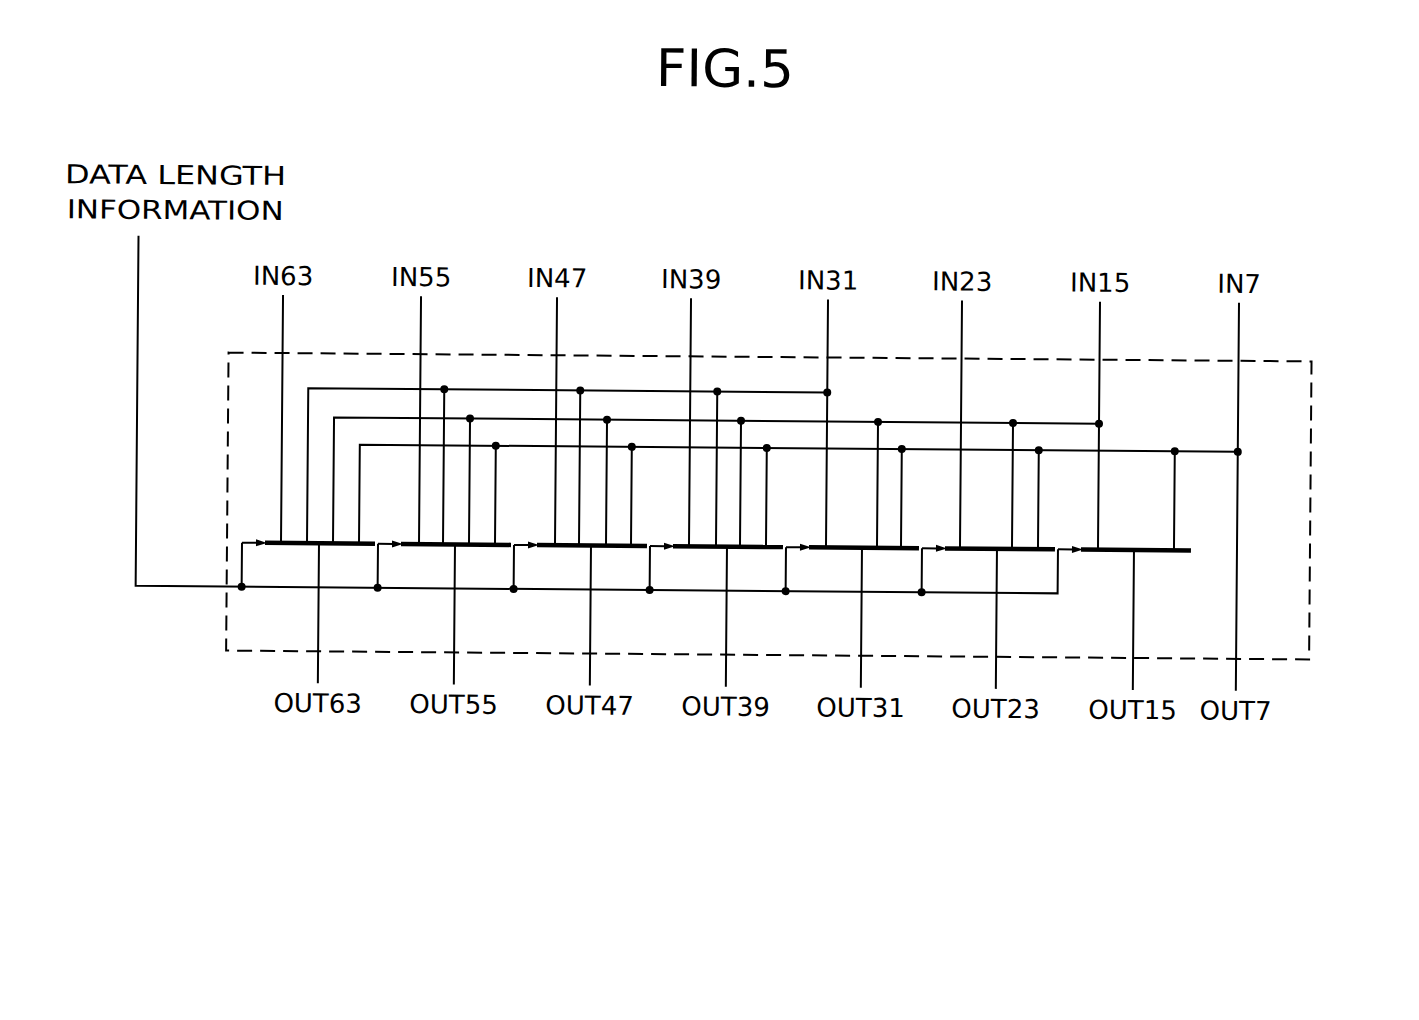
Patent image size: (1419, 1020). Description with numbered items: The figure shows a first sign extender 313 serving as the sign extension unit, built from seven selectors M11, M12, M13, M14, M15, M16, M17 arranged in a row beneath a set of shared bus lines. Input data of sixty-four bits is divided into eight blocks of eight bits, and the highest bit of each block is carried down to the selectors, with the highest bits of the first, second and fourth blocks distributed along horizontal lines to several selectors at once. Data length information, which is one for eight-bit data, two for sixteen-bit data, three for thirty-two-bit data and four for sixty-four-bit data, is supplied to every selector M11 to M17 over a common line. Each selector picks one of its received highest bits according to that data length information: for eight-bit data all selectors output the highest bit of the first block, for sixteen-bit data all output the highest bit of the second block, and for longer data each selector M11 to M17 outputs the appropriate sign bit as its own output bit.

The first sign extender 313 is at (1310, 508).
The selector M17 is at (345, 547).
The selector M16 is at (481, 547).
The selector M15 is at (617, 547).
The selector M14 is at (753, 547).
The selector M13 is at (889, 547).
The selector M12 is at (1025, 547).
The selector M11 is at (1161, 547).